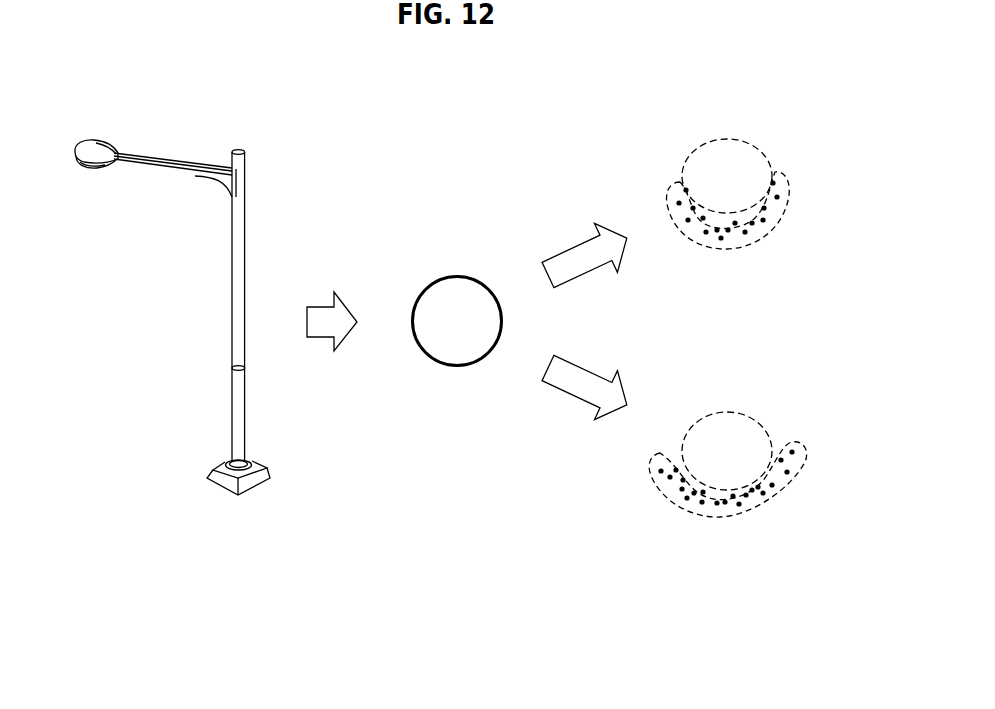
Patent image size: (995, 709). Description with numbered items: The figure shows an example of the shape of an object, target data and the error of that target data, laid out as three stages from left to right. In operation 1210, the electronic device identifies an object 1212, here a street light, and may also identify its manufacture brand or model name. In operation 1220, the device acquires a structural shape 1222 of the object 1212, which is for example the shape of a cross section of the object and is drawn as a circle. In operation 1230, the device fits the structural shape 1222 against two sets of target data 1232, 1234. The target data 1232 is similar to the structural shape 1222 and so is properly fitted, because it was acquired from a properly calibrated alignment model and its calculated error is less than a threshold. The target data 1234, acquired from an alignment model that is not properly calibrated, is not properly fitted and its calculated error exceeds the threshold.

The object identifying operation 1210 is at (218, 105).
The object 1212 is at (237, 412).
The structural shape acquiring operation 1220 is at (477, 105).
The structural shape 1222 is at (454, 277).
The fitting operation 1230 is at (752, 105).
The target data 1232 is at (768, 235).
The target data 1234 is at (775, 498).